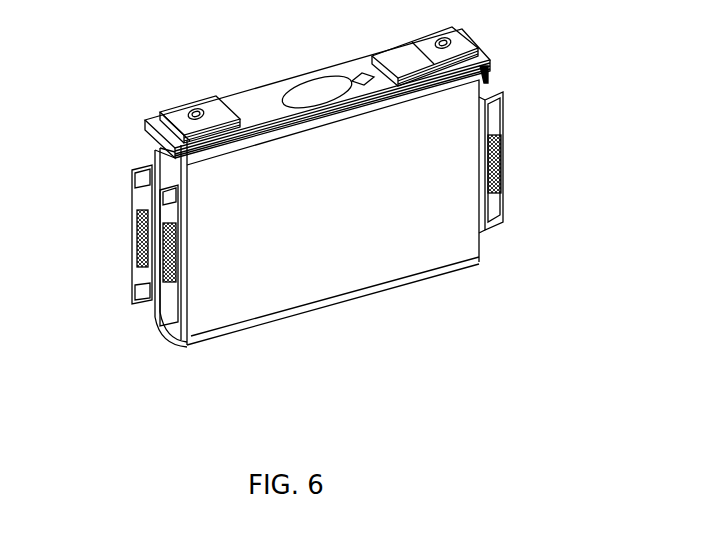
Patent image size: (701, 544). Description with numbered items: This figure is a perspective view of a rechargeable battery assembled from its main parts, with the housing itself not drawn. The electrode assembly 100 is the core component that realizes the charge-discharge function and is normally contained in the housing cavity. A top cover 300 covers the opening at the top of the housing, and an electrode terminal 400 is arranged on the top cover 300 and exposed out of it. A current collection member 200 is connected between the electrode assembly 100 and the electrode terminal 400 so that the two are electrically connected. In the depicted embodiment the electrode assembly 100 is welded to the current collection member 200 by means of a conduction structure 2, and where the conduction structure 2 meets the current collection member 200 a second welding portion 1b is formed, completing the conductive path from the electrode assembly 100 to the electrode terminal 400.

The electrode assembly 100 is at (312, 266).
The current collection member 200 is at (153, 165).
The top cover 300 is at (276, 90).
The electrode terminal 400 is at (190, 110).
The conduction structure 2 is at (132, 173).
The second welding portion 1b is at (135, 257).